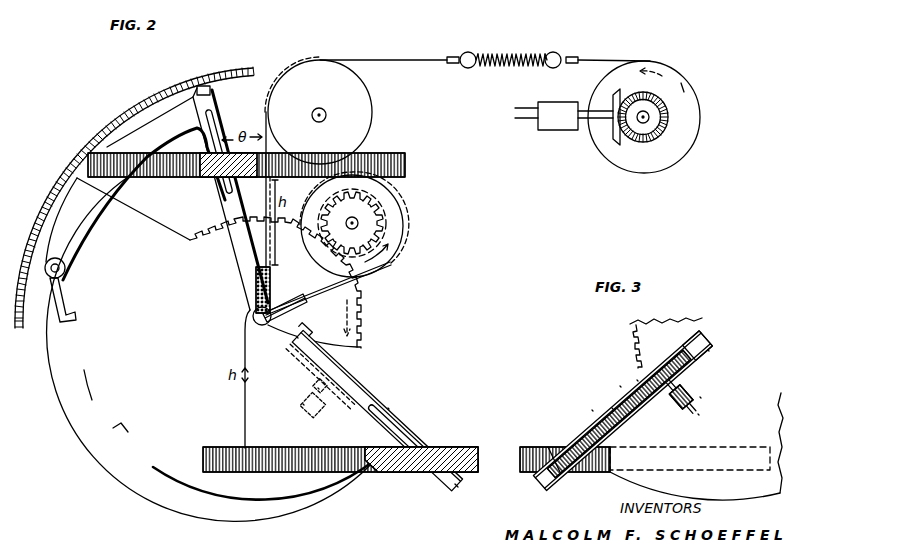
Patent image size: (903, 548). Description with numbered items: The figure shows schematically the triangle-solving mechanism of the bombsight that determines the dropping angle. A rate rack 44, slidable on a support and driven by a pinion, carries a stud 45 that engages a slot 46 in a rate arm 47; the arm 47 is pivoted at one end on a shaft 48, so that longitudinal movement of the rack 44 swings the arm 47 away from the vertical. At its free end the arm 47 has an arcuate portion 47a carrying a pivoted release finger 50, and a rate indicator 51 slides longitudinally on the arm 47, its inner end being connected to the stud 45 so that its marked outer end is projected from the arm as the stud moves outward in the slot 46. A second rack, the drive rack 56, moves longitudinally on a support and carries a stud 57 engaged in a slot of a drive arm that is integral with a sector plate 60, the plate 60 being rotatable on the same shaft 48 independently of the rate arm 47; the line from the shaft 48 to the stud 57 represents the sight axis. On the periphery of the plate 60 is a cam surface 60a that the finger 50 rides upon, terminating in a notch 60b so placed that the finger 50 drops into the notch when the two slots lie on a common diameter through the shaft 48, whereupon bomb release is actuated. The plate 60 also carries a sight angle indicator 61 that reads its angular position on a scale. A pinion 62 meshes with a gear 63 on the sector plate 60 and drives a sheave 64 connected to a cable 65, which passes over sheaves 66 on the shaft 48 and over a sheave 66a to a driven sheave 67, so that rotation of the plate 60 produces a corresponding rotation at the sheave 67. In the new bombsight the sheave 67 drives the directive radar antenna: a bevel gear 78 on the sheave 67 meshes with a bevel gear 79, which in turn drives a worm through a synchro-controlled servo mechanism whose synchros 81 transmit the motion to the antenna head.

In FIG. 2, the rack 44 is at (405, 160).
In FIG. 2, the stud 45 is at (213, 177).
In FIG. 2, the slot 46 is at (220, 128).
In FIG. 2, the rate arm 47 is at (233, 205).
In FIG. 2, the arcuate portion 47a is at (72, 212).
In FIG. 2, the shaft 48 is at (353, 347).
In FIG. 2, the release finger 50 is at (62, 307).
In FIG. 2, the rate indicator 51 is at (205, 86).
In FIG. 2, the drive rack 56 is at (323, 473).
In FIG. 3, the drive rack 56 is at (588, 472).
In FIG. 2, the stud 57 is at (437, 474).
In FIG. 3, the stud 57 is at (550, 447).
In FIG. 2, the sector plate 60 is at (237, 485).
In FIG. 3, the sector plate 60 is at (657, 472).
In FIG. 2, the cam surface 60a is at (88, 387).
In FIG. 2, the notch 60b is at (125, 435).
In FIG. 2, the sight angle indicator 61 is at (62, 167).
In FIG. 2, the pinion 62 is at (376, 228).
In FIG. 2, the gear 63 is at (362, 297).
In FIG. 3, the gear 63 is at (632, 330).
In FIG. 2, the sheave 64 is at (397, 208).
In FIG. 2, the cable 65 is at (423, 62).
In FIG. 2, the sheaves 66 is at (273, 307).
In FIG. 2, the sheave 66a is at (327, 70).
In FIG. 2, the driven sheave 67 is at (690, 104).
In FIG. 2, the bevel gear 78 is at (642, 130).
In FIG. 2, the bevel gear 79 is at (615, 136).
In FIG. 2, the synchros 81 is at (560, 122).